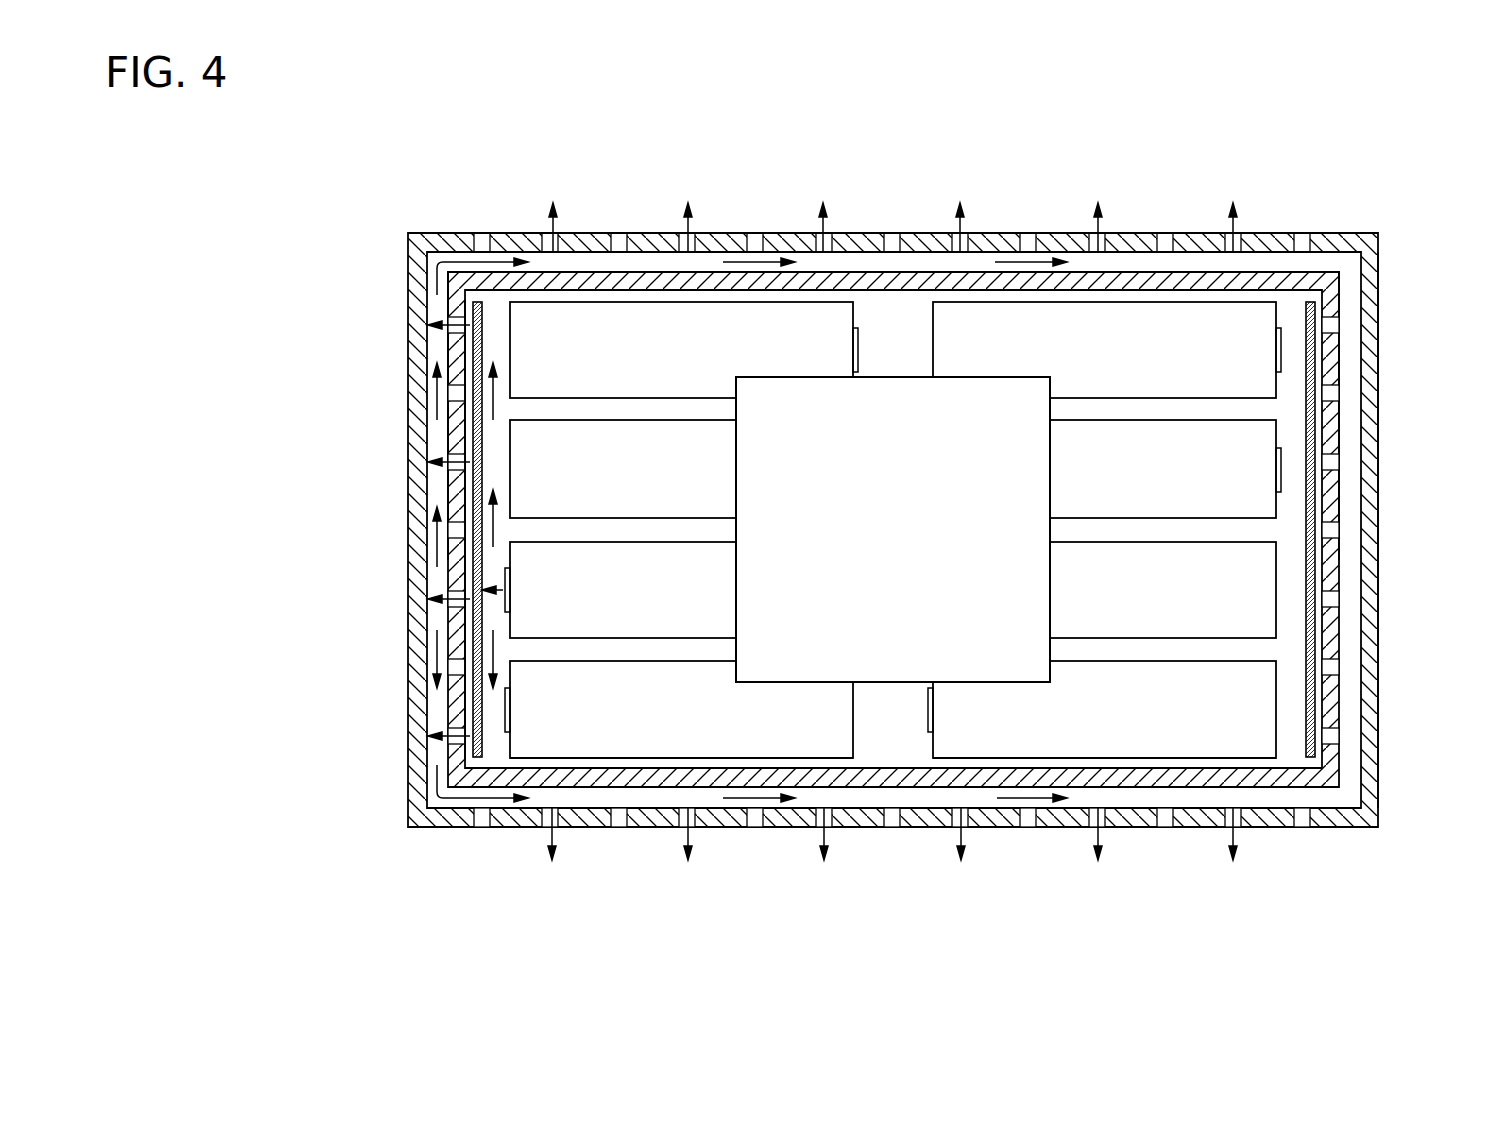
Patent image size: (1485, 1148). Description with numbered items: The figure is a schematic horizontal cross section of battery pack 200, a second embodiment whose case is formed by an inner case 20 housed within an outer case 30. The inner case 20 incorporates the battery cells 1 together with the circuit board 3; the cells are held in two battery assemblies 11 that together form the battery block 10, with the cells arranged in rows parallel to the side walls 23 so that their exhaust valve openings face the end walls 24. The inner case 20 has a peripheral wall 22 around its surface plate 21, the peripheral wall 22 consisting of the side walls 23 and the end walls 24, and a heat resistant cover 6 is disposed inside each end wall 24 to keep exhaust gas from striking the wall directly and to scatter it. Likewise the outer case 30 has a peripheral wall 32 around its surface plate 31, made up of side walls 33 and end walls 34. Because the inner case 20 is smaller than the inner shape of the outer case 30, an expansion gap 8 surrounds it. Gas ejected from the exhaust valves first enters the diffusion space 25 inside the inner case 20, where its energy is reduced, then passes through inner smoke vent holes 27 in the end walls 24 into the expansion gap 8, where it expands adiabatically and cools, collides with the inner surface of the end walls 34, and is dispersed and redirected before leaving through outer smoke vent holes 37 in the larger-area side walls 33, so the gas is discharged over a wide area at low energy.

The battery pack 200 is at (415, 120).
The battery cell 1 is at (669, 371).
The circuit board 3 is at (874, 543).
The heat resistant cover 6 is at (483, 440).
The expansion gap 8 is at (443, 342).
The battery block 10 is at (1062, 900).
The battery assembly 11 is at (719, 775).
The inner case 20 is at (592, 100).
The surface plate 21 is at (867, 313).
The peripheral wall 22 is at (558, 157).
The side wall 23 is at (667, 282).
The end wall 24 is at (459, 357).
The diffusion space 25 is at (478, 627).
The inner smoke vent hole 27 is at (432, 450).
The outer case 30 is at (928, 100).
The surface plate 31 is at (922, 263).
The peripheral wall 32 is at (1413, 157).
The side wall 33 is at (1066, 280).
The end wall 34 is at (1373, 330).
The outer smoke vent hole 37 is at (547, 213).